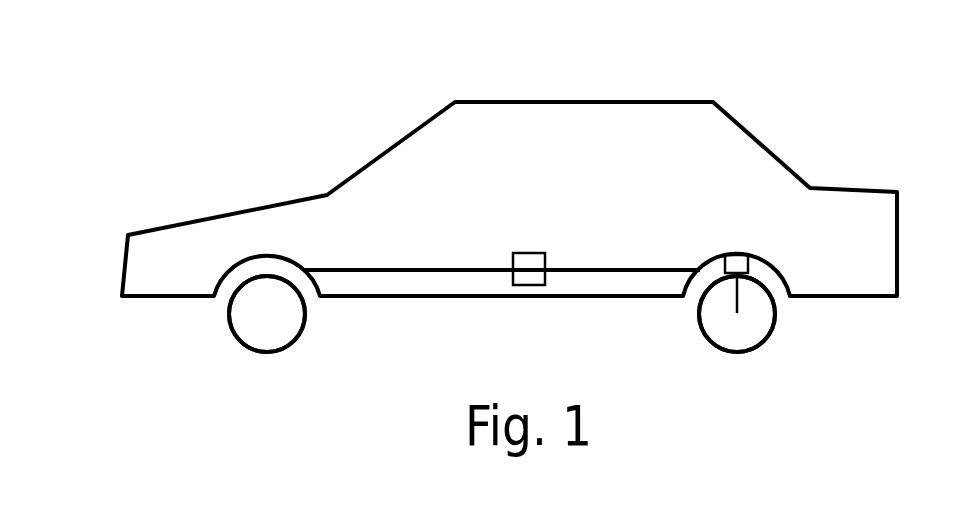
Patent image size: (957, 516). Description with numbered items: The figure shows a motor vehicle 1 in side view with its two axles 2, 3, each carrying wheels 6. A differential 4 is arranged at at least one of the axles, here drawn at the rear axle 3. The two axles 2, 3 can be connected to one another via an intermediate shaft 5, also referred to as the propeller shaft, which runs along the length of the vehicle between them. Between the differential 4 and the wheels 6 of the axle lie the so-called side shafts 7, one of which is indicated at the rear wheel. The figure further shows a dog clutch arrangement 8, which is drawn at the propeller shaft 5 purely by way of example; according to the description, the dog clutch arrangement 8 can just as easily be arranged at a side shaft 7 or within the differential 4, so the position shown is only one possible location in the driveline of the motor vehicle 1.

The motor vehicle 1 is at (283, 137).
The axle 2 is at (235, 346).
The axle 3 is at (704, 354).
The differential 4 is at (739, 265).
The intermediate shaft 5 is at (410, 266).
The wheels 6 is at (293, 323).
The side shaft 7 is at (738, 293).
The dog clutch arrangement 8 is at (534, 236).